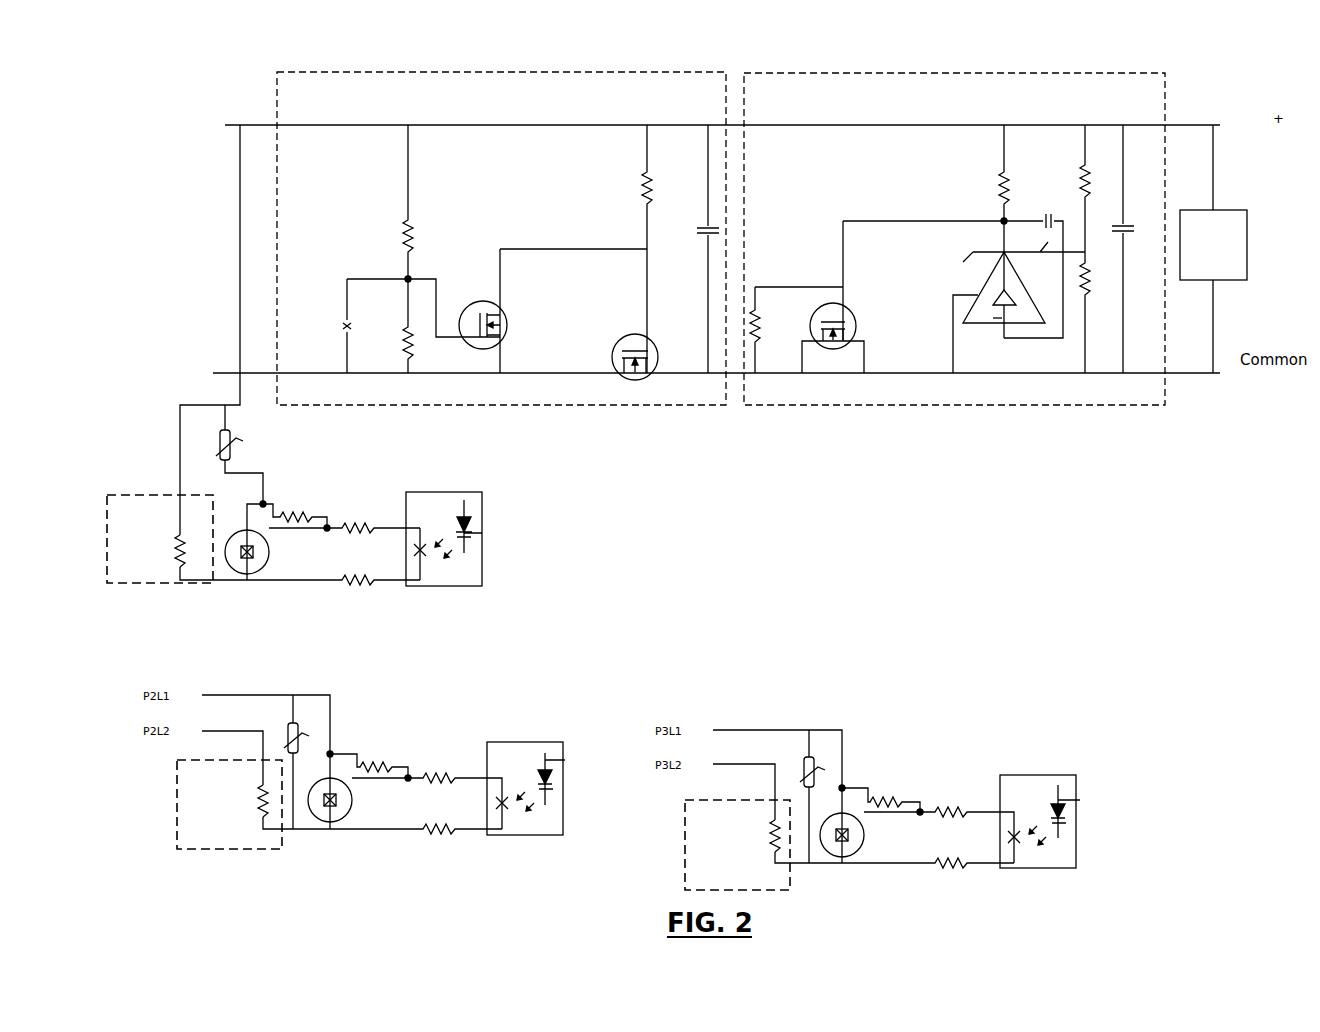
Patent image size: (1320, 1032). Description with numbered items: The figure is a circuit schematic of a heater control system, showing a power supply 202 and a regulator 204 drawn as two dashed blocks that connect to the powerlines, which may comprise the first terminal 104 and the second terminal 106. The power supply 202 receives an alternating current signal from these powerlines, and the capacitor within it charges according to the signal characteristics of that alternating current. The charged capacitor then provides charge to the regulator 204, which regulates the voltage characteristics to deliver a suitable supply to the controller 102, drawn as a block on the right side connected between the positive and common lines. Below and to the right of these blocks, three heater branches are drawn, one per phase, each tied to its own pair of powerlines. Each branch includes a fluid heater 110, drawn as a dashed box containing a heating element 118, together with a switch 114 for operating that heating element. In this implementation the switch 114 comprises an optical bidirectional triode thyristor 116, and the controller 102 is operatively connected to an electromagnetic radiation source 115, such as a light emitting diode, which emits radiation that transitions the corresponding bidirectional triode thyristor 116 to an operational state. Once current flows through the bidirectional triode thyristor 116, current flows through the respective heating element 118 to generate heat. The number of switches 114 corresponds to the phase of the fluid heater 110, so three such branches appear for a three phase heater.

The controller 102 is at (1230, 210).
The first terminal 104 is at (485, 125).
The second terminal 106 is at (475, 373).
The fluid heater 110 is at (133, 585).
The switch 114 is at (420, 550).
The electromagnetic radiation source 115 is at (482, 533).
The bidirectional triode thyristor 116 is at (250, 555).
The heating element 118 is at (182, 565).
The power supply 202 is at (266, 66).
The regulator 204 is at (809, 66).